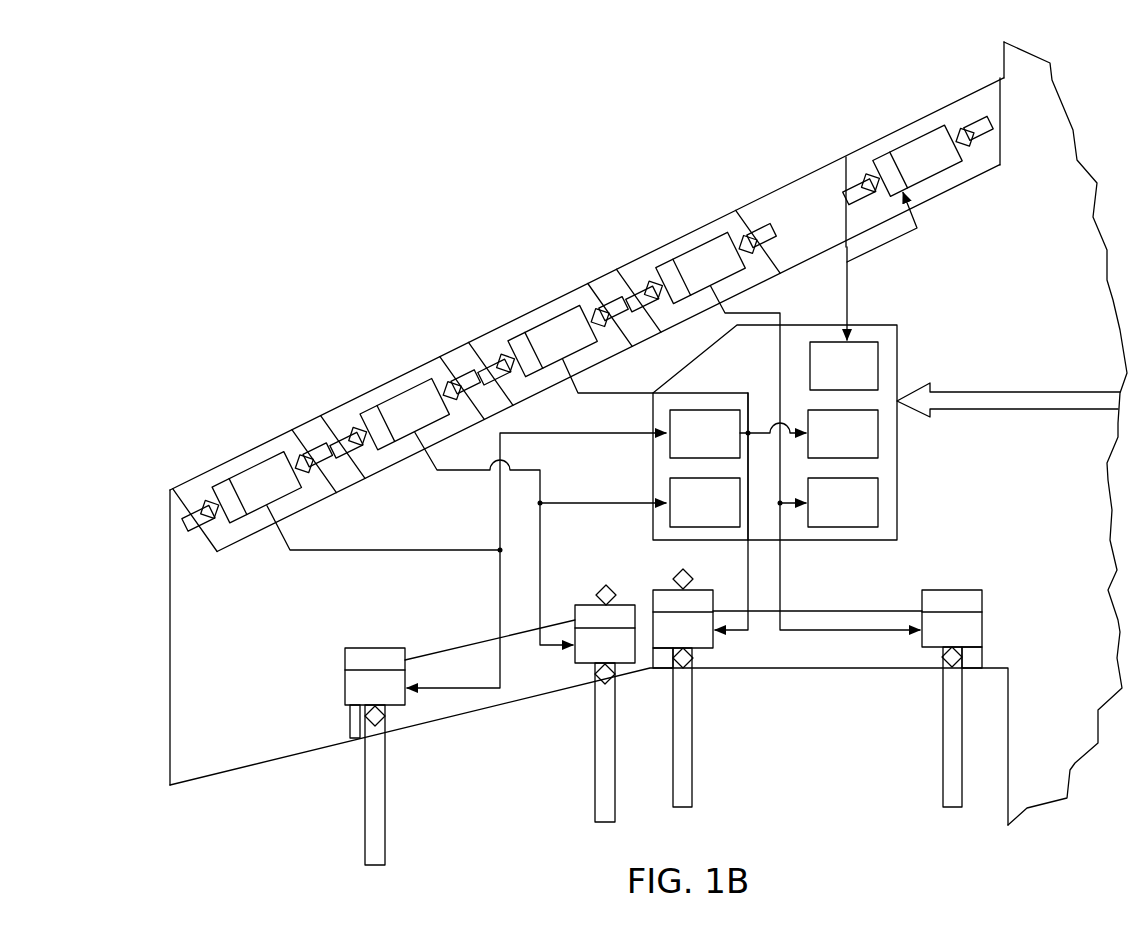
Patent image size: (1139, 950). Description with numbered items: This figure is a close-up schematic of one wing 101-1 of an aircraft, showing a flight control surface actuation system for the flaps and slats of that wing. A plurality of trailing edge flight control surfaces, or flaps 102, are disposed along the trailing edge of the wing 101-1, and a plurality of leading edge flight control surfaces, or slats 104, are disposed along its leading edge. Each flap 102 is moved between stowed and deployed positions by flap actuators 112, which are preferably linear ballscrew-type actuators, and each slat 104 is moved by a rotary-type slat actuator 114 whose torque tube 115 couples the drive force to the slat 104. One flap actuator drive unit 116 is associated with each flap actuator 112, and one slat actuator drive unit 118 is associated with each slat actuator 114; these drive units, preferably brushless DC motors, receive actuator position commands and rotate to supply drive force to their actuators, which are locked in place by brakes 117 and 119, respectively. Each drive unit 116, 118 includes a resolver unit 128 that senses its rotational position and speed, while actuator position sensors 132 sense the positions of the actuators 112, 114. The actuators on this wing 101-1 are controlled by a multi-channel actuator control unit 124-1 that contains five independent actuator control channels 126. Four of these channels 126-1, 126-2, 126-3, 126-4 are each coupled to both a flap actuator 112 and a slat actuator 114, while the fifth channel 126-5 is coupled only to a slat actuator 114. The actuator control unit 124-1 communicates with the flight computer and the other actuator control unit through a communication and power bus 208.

The wing 101-1 is at (170, 690).
The trailing edge flight control surface (flap) 102 is at (482, 710).
The leading edge flight control surface (slat) 104 is at (227, 466).
The flap actuator 112 is at (310, 716).
The slat actuator 114 is at (228, 388).
The torque tube 115 is at (190, 512).
The flap actuator drive unit 116 is at (657, 622).
The brake 117 is at (375, 648).
The slat actuator drive unit 118 is at (587, 324).
The brake 119 is at (250, 522).
The actuator control unit 124-1 is at (897, 463).
The actuator control channel 126 is at (774, 441).
The actuator control channel 126-1 is at (843, 434).
The actuator control channel 126-2 is at (843, 502).
The actuator control channel 126-3 is at (705, 502).
The actuator control channel 126-4 is at (705, 434).
The actuator control channel 126-5 is at (844, 366).
The resolver unit 128 is at (300, 456).
The actuator position sensor 132 is at (205, 522).
The communication and power bus 208 is at (1063, 392).